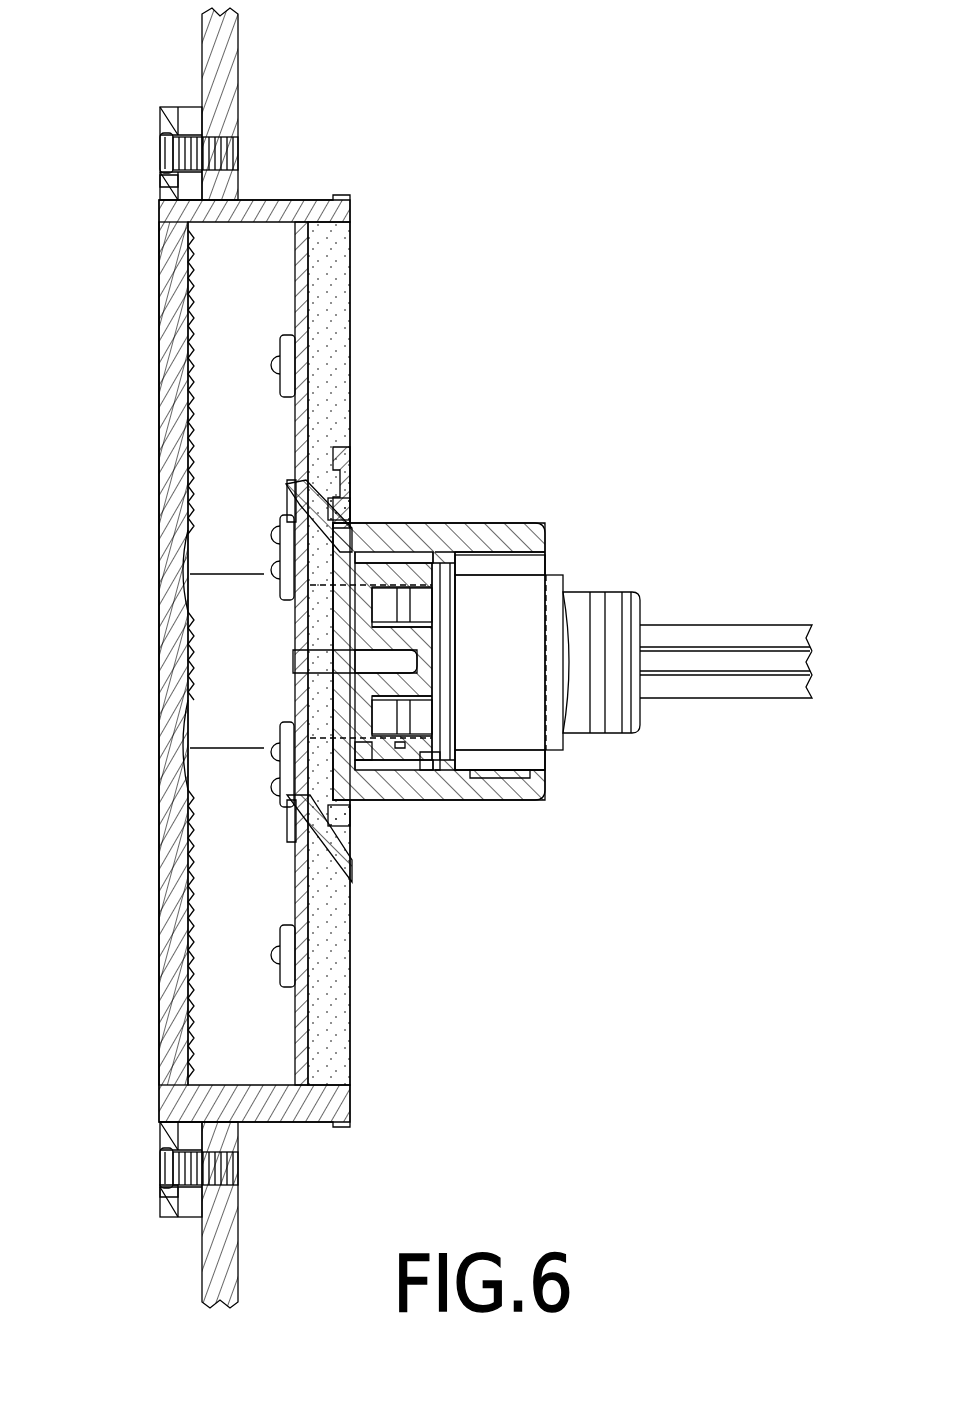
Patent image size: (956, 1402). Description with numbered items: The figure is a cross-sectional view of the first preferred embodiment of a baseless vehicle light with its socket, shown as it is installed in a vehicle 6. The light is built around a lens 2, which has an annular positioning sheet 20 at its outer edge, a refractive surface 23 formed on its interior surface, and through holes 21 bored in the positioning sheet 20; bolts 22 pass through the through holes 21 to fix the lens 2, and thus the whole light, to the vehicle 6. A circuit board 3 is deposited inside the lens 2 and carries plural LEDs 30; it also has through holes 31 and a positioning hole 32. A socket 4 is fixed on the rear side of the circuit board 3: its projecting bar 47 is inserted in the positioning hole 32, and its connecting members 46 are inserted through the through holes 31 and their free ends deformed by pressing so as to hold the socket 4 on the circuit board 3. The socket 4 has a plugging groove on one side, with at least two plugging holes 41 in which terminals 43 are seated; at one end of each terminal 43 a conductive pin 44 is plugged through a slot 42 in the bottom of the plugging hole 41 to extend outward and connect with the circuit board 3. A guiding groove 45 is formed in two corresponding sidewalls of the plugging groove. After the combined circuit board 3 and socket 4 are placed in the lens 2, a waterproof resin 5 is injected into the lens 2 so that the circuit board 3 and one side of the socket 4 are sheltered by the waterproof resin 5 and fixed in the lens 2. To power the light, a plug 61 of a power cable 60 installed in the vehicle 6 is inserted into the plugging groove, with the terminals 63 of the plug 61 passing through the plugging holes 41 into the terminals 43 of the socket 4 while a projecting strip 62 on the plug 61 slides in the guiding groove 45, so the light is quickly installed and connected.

The lens 2 is at (282, 200).
The circuit board 3 is at (300, 243).
The socket 4 is at (462, 522).
The waterproof resin 5 is at (338, 277).
The vehicle 6 is at (228, 47).
The annular positioning sheet 20 is at (168, 112).
The through holes 21 is at (162, 183).
The bolts 22 is at (180, 153).
The refractive surface 23 is at (186, 280).
The LEDs 30 is at (275, 362).
The through holes 31 is at (303, 485).
The positioning hole 32 is at (293, 627).
The plugging holes 41 is at (430, 770).
The slot 42 is at (370, 760).
The terminals 43 is at (400, 745).
The conductive pin 44 is at (285, 742).
The guiding groove 45 is at (503, 765).
The connecting members 46 is at (290, 508).
The projecting bar 47 is at (320, 661).
The power cable 60 is at (765, 638).
The plug 61 is at (530, 620).
The projecting strip 62 is at (540, 760).
The terminals 63 is at (445, 598).